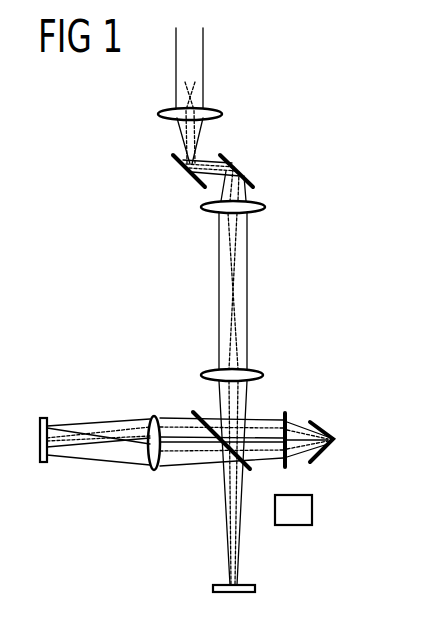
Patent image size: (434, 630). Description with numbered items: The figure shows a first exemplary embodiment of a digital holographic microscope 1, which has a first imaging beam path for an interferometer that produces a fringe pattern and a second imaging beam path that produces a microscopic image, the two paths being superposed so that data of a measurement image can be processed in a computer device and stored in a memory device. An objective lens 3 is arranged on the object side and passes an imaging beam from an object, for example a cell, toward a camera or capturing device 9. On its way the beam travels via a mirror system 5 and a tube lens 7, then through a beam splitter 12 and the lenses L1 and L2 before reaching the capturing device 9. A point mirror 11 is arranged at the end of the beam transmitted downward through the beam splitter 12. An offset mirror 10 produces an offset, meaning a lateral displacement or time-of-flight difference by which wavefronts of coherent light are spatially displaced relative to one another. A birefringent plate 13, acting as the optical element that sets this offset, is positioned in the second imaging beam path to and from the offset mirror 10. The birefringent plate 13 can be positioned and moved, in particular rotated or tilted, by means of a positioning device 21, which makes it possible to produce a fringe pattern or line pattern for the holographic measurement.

The digital holographic microscope 1 is at (302, 103).
The objective lens 3 is at (222, 114).
The mirror system 5 is at (248, 170).
The tube lens 7 is at (265, 207).
The capturing device 9 is at (45, 418).
The offset mirror 10 is at (335, 432).
The point mirror 11 is at (255, 588).
The beam splitter 12 is at (221, 446).
The birefringent plate 13 is at (290, 465).
The positioning device 21 is at (312, 510).
The lens L1 is at (263, 375).
The lens L2 is at (154, 415).